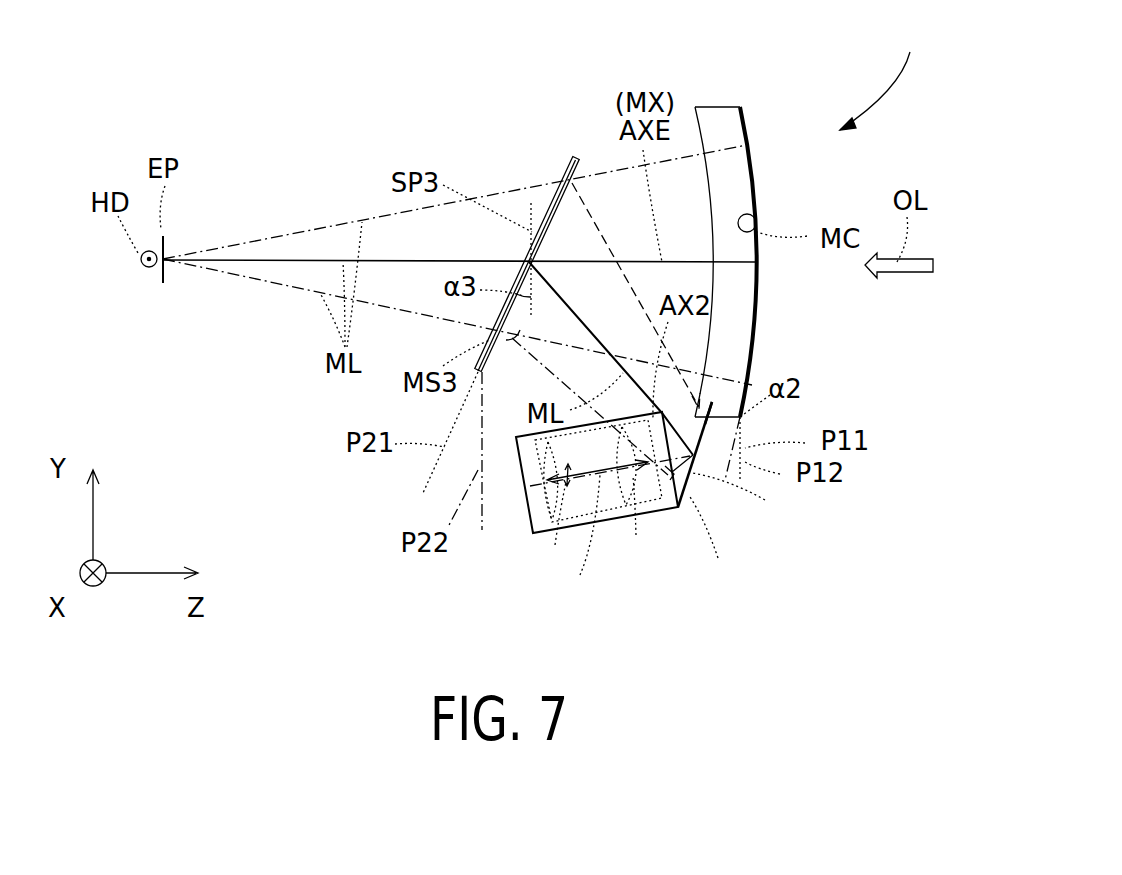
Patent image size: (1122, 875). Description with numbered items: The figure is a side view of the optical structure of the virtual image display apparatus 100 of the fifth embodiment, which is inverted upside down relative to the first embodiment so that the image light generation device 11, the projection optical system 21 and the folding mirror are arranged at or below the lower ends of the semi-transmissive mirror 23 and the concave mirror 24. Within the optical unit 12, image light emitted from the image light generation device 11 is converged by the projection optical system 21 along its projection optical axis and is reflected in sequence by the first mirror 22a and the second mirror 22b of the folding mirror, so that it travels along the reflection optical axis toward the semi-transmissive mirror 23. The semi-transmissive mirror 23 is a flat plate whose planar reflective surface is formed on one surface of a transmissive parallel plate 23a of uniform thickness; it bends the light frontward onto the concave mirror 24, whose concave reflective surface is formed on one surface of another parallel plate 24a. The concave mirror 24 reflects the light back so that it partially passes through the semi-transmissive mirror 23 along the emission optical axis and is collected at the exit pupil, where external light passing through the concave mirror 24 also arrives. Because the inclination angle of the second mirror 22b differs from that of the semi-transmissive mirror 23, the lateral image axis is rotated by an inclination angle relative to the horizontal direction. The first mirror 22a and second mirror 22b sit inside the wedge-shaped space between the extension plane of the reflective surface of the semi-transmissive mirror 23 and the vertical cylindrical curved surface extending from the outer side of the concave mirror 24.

The virtual image display apparatus 100 is at (886, 73).
The optical unit 12 is at (828, 405).
The image light generation device 11 is at (607, 520).
The projection optical system 21 is at (537, 518).
The first mirror 22a is at (680, 508).
The second mirror 22b is at (700, 483).
The semi-transmissive mirror 23 is at (570, 157).
The parallel plate 23a is at (553, 198).
The concave mirror 24 is at (783, 262).
The parallel plate 24a is at (753, 177).